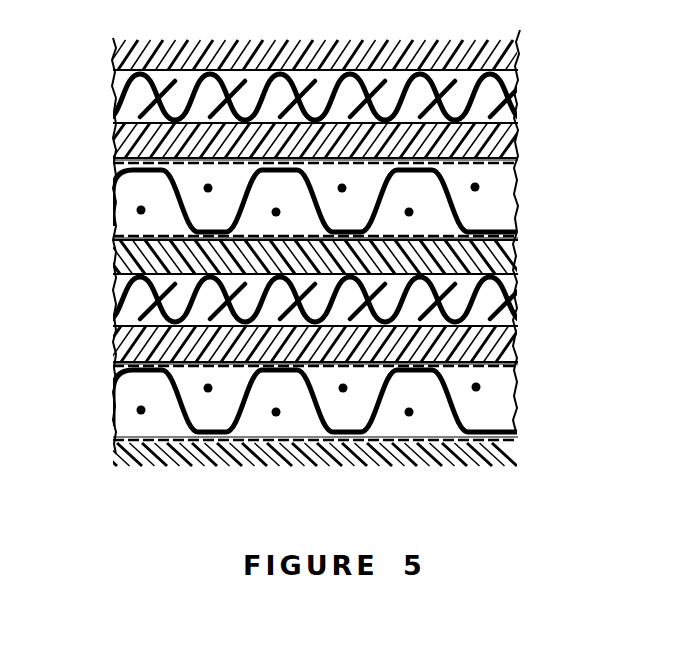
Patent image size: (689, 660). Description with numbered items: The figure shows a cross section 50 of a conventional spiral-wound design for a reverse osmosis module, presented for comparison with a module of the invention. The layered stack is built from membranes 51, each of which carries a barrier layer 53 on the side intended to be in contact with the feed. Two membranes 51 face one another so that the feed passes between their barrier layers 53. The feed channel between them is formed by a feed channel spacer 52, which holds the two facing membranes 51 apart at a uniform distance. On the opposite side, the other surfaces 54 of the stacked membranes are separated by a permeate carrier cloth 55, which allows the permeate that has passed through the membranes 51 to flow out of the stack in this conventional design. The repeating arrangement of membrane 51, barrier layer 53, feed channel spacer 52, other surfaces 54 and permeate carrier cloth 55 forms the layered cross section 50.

The cross section 50 is at (340, 528).
The membrane 51 is at (500, 158).
The feed channel spacer 52 is at (505, 198).
The barrier layer 53 is at (113, 235).
The other surfaces 54 is at (500, 137).
The permeate carrier cloth 55 is at (137, 97).